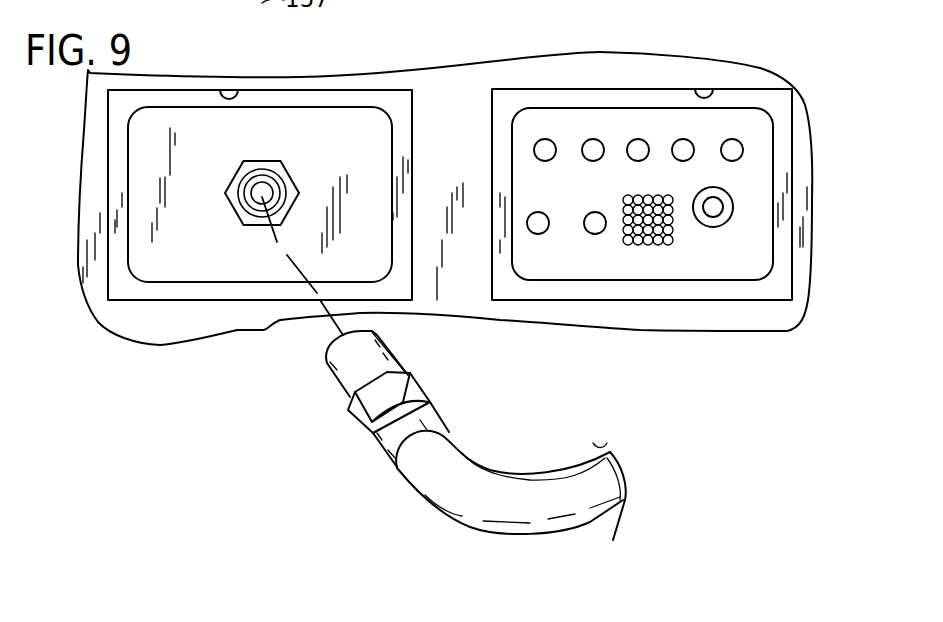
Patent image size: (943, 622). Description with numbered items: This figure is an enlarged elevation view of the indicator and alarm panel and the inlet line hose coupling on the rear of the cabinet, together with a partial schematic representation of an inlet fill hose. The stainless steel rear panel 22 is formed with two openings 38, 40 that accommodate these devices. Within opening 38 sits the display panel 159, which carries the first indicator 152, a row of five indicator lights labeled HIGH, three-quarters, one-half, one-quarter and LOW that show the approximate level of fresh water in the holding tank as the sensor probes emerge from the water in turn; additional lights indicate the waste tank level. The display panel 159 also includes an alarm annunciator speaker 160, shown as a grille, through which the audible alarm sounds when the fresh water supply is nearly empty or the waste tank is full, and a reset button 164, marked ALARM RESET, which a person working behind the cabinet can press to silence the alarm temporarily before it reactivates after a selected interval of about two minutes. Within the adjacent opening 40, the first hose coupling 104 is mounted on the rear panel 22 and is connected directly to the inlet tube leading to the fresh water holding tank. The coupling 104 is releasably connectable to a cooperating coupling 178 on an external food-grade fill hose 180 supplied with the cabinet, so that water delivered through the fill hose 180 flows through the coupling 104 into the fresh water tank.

The rear panel 22 is at (472, 113).
The opening 38 is at (713, 97).
The opening 40 is at (237, 100).
The first hose coupling 104 is at (282, 182).
The first indicator 152 is at (524, 149).
The display panel 159 is at (680, 273).
The alarm annunciator speaker 160 is at (655, 245).
The reset button 164 is at (733, 208).
The cooperating coupling 178 is at (333, 381).
The fill hose 180 is at (495, 472).